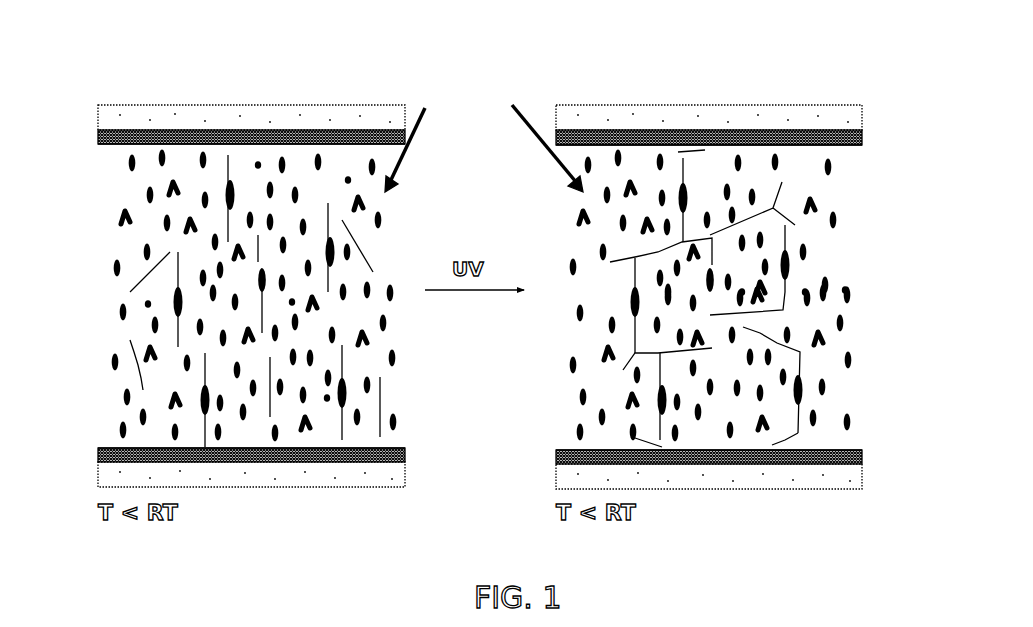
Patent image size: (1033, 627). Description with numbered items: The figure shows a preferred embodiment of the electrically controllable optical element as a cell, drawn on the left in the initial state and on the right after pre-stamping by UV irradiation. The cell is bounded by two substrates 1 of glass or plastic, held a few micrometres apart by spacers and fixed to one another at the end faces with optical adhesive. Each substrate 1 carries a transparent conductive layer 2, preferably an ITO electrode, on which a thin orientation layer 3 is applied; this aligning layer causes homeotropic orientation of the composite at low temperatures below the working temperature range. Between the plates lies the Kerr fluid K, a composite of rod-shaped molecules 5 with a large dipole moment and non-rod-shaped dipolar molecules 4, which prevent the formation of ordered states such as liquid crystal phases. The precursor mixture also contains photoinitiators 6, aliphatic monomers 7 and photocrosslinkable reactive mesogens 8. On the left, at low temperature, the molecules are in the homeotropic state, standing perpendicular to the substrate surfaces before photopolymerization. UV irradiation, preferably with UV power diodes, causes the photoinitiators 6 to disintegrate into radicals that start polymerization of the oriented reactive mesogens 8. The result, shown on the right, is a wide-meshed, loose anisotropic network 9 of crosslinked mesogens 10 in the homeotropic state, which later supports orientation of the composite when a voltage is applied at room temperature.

The substrates 1 is at (100, 112).
The conductive layer 2 is at (98, 134).
The orientation layer 3 is at (98, 141).
The non-rod-shaped molecules 4 is at (118, 215).
The rod-shaped molecules 5 is at (112, 266).
The photoinitiators 6 is at (142, 304).
The aliphatic monomers 7 is at (127, 350).
The reactive mesogens 8 is at (197, 398).
The anisotropic network 9 is at (766, 327).
The crosslinked mesogens 10 is at (810, 392).
The Kerr fluid K is at (484, 136).